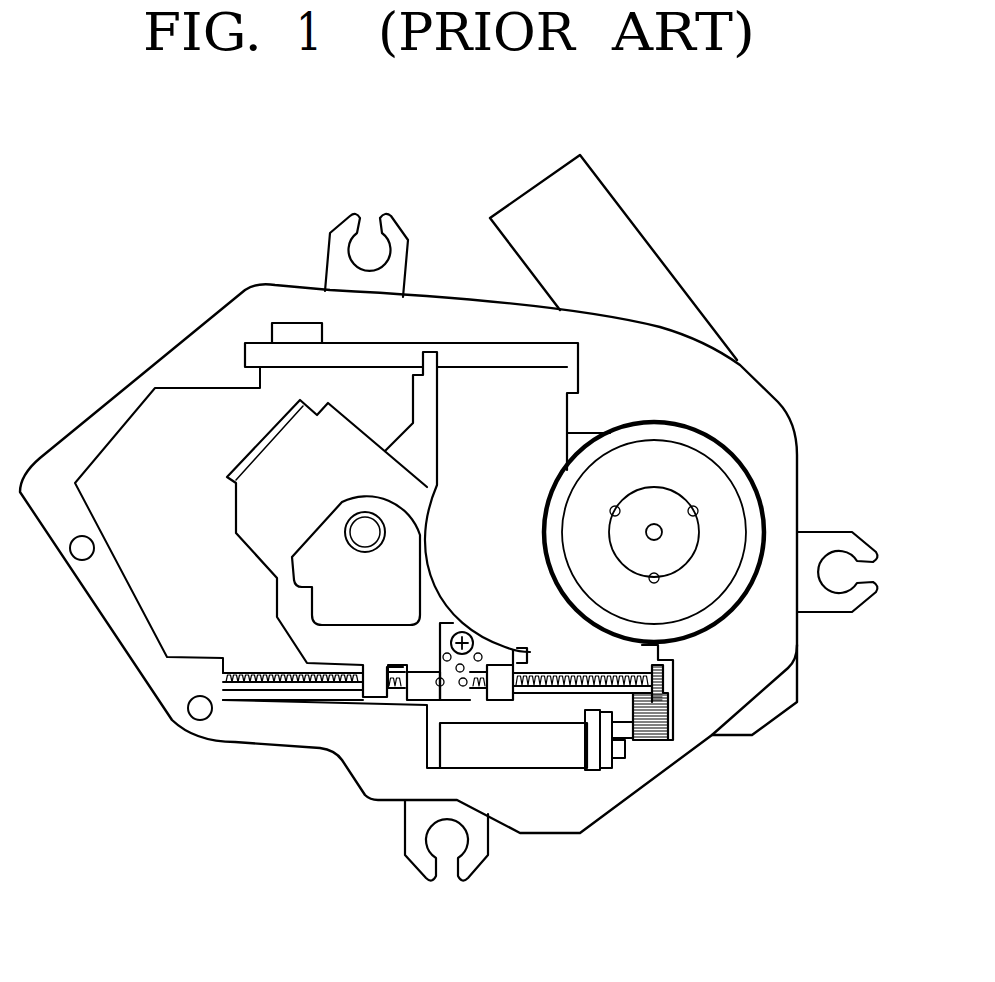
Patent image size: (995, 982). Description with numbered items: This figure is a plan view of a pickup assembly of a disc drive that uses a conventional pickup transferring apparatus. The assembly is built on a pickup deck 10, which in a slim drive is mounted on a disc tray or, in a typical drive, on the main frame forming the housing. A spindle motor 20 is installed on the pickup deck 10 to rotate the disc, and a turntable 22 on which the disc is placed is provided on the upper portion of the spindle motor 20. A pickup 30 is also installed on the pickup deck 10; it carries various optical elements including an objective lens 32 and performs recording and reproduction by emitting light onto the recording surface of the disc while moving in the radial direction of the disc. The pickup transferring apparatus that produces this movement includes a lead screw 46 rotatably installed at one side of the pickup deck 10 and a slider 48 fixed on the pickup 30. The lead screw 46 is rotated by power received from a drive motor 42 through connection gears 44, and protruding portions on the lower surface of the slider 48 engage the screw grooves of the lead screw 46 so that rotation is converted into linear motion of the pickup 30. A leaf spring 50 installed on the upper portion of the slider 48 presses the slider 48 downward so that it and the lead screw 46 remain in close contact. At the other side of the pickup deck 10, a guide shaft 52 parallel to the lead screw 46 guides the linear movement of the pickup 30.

The pickup deck 10 is at (735, 695).
The spindle motor 20 is at (747, 470).
The turntable 22 is at (760, 533).
The pickup 30 is at (246, 576).
The objective lens 32 is at (360, 532).
The drive motor 42 is at (528, 753).
The connection gears 44 is at (655, 733).
The lead screw 46 is at (265, 690).
The slider 48 is at (415, 685).
The leaf spring 50 is at (495, 652).
The guide shaft 52 is at (472, 353).